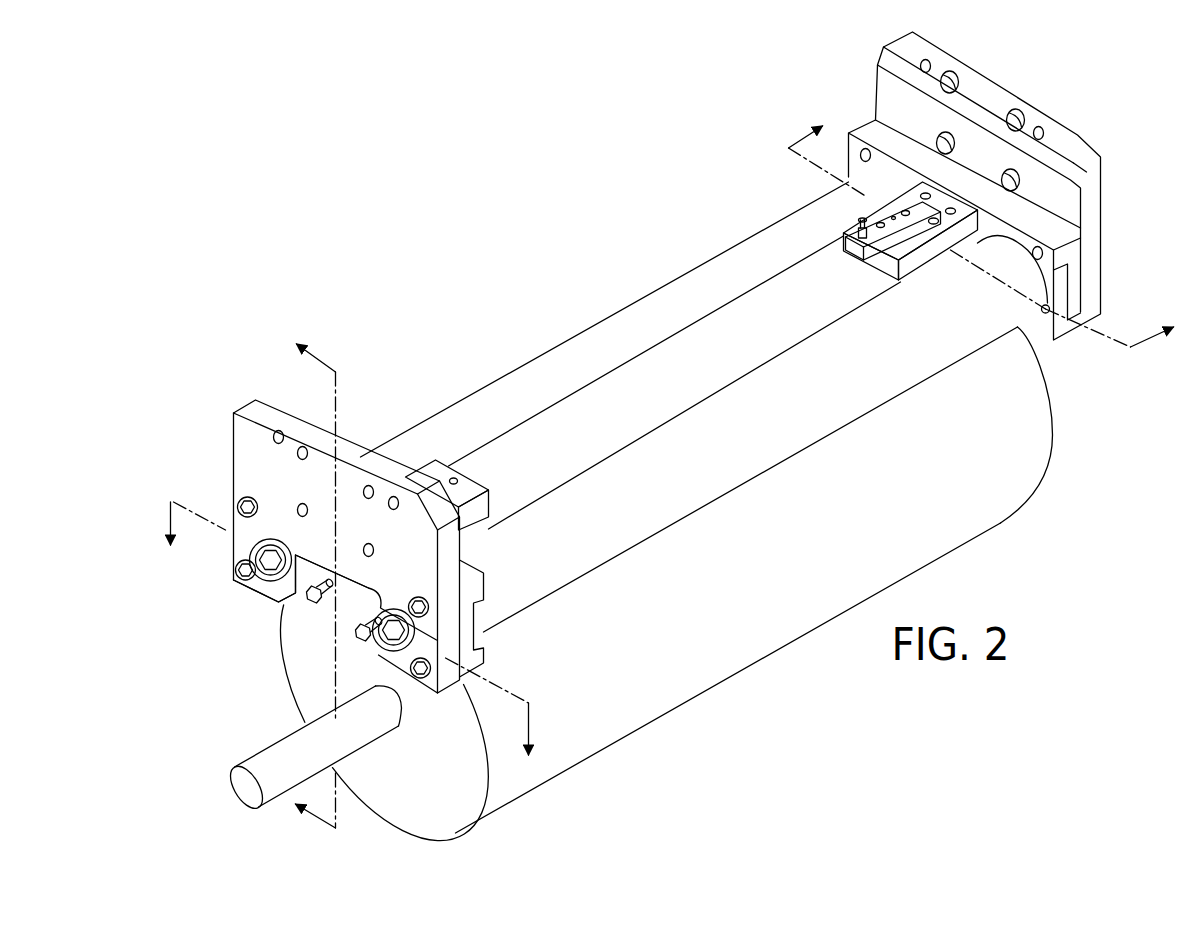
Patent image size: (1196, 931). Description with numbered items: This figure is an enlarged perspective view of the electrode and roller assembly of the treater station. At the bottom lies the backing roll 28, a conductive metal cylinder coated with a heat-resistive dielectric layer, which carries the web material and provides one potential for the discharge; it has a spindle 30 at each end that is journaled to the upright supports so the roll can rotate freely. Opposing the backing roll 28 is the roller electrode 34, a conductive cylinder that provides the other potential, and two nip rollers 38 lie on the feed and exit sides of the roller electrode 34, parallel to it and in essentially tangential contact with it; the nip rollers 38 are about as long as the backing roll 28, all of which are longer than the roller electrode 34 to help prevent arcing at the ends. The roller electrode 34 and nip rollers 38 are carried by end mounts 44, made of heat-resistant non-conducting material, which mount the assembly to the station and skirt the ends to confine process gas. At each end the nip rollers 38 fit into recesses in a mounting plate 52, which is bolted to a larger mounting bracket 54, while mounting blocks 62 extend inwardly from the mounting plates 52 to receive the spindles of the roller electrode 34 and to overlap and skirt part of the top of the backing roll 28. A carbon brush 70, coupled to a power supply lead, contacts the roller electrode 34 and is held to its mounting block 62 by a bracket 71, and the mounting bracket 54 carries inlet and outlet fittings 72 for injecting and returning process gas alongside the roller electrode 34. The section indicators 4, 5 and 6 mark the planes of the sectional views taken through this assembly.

The backing roll 28 is at (760, 642).
The spindle 30 is at (236, 784).
The roller electrode 34 is at (573, 465).
The nip rollers 38 is at (708, 408).
The end mounts 44 is at (230, 494).
The mounting plate 52 is at (476, 589).
The mounting bracket 54 is at (421, 561).
The mounting blocks 62 is at (468, 524).
The carbon brush 70 is at (856, 221).
The bracket 71 is at (848, 246).
The inlet and outlet fittings 72 is at (358, 640).
The section line 4- 4 is at (350, 645).
The section line 5- 5 is at (304, 573).
The section line 6- 6 is at (989, 223).